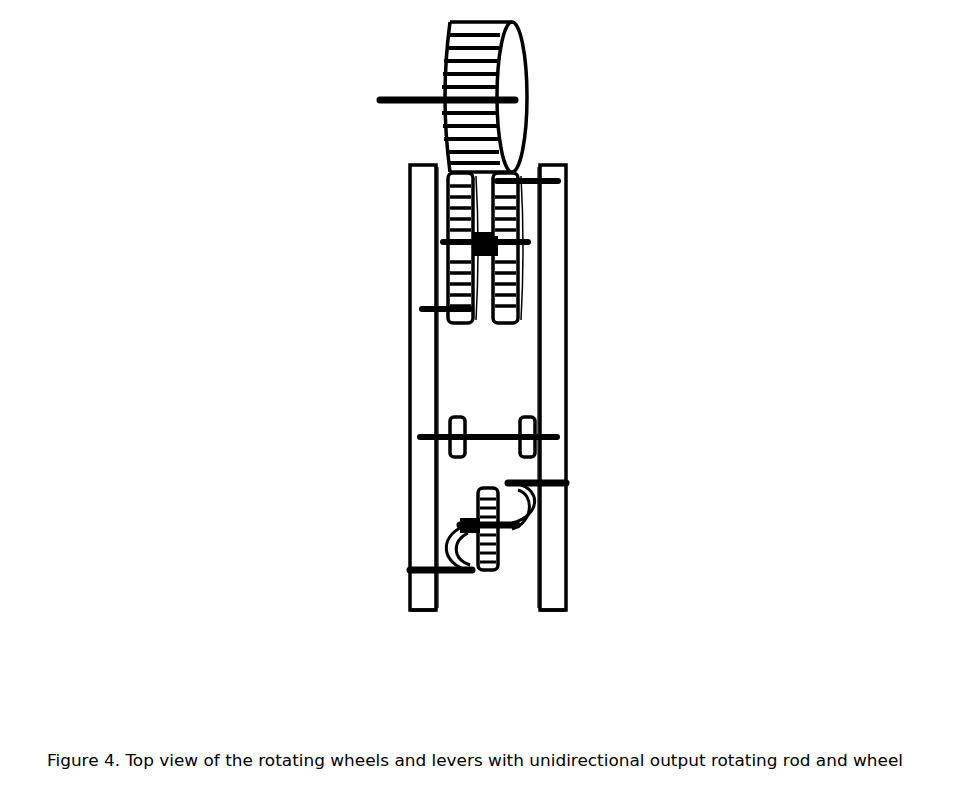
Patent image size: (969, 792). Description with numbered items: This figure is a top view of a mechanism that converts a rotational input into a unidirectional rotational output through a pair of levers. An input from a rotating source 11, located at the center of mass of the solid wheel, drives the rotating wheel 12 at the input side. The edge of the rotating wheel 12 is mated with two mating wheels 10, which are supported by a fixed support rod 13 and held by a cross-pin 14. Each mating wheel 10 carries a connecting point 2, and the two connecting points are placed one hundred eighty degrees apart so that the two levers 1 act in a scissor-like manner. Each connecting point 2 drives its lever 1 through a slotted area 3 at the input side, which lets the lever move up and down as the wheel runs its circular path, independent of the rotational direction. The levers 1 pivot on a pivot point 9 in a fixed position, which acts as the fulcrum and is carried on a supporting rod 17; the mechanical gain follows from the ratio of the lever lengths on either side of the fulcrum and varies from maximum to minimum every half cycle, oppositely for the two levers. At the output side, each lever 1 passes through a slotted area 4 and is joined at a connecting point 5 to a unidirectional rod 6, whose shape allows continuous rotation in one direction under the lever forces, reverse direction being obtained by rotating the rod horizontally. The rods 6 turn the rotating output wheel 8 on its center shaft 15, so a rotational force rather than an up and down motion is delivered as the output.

The lever 1 is at (408, 403).
The connecting point for lever and rotating wheel 2 is at (529, 171).
The slotted area for lever movement at the input side 3 is at (432, 240).
The slotted area for lever movement at the output side 4 is at (428, 583).
The connecting point for unidirectional rod and lever 5 is at (557, 493).
The unidirectional rod 6 is at (446, 526).
The rotating output wheel 8 is at (487, 574).
The pivot point 9 is at (559, 437).
The mating wheel 10 is at (447, 204).
The input from a rotating source 11 is at (372, 98).
The rotating wheel 12 is at (530, 64).
The support rod for the mating wheel 13 is at (480, 268).
The cross-pin for the mating wheel 14 is at (527, 243).
The center shaft for output wheel 15 is at (506, 536).
The supporting rod for the fulcrum 17 is at (519, 413).